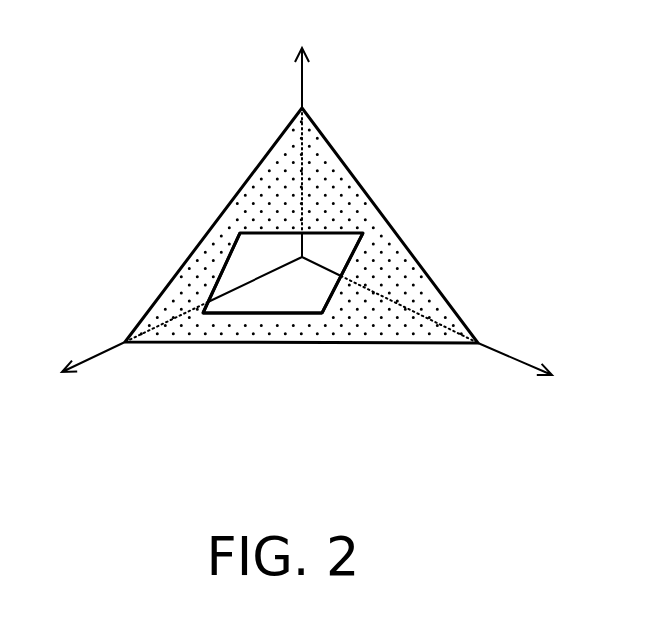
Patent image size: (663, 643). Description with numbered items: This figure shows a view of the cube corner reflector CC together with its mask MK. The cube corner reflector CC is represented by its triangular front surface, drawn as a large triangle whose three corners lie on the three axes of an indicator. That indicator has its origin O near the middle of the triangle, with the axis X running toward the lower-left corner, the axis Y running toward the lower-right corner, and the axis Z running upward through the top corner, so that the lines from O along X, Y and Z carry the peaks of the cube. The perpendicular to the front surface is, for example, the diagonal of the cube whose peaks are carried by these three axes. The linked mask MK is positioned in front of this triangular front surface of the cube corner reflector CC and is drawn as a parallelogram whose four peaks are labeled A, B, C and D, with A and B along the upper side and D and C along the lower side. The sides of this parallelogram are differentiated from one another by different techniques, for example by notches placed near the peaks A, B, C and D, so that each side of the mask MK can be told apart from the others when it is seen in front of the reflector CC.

The linked mask MK is at (227, 252).
The cube corner reflector CC is at (422, 262).
The origin of indicator OXYZ O is at (301, 225).
The peak A of parallelogram mask A is at (283, 262).
The peak B of parallelogram mask B is at (351, 262).
The peak C of parallelogram mask C is at (268, 325).
The peak D of parallelogram mask D is at (215, 285).
The X axis of indicator OXYZ X is at (88, 370).
The Y axis of indicator OXYZ Y is at (523, 374).
The Z axis of indicator OXYZ Z is at (302, 66).